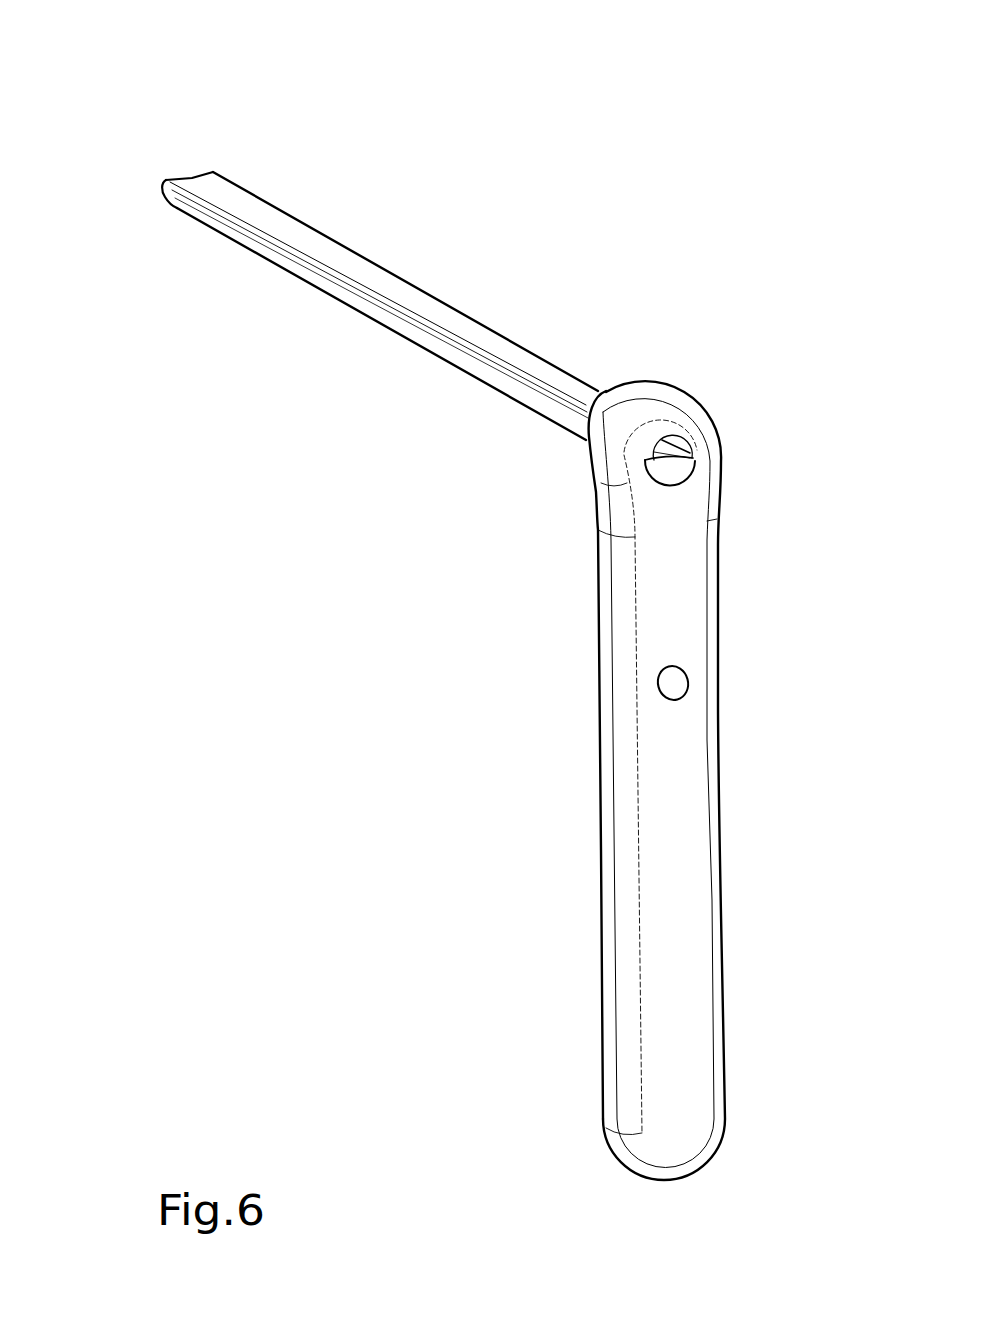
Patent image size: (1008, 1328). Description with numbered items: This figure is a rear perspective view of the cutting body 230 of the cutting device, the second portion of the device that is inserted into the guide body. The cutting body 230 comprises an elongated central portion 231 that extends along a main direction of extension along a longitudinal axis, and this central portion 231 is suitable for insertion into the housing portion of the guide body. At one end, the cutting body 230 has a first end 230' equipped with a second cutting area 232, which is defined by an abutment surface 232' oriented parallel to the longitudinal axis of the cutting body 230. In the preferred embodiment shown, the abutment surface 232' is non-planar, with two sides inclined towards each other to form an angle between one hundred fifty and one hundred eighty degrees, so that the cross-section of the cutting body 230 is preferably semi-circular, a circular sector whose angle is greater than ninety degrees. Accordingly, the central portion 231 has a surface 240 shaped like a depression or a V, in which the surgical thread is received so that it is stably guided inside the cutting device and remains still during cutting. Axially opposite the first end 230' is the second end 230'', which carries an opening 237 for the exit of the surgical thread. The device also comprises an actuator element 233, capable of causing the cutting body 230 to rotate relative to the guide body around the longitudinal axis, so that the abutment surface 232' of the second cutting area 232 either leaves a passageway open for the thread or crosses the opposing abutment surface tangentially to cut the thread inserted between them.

The cutting body 230 is at (474, 780).
The first end 230' is at (405, 214).
The second end 230'' is at (702, 692).
The central portion 231 is at (348, 305).
The second cutting area 232 is at (112, 128).
The abutment surface 232' is at (201, 98).
The actuator element 233 is at (682, 618).
The opening 237 is at (681, 455).
The surface 240 is at (392, 287).